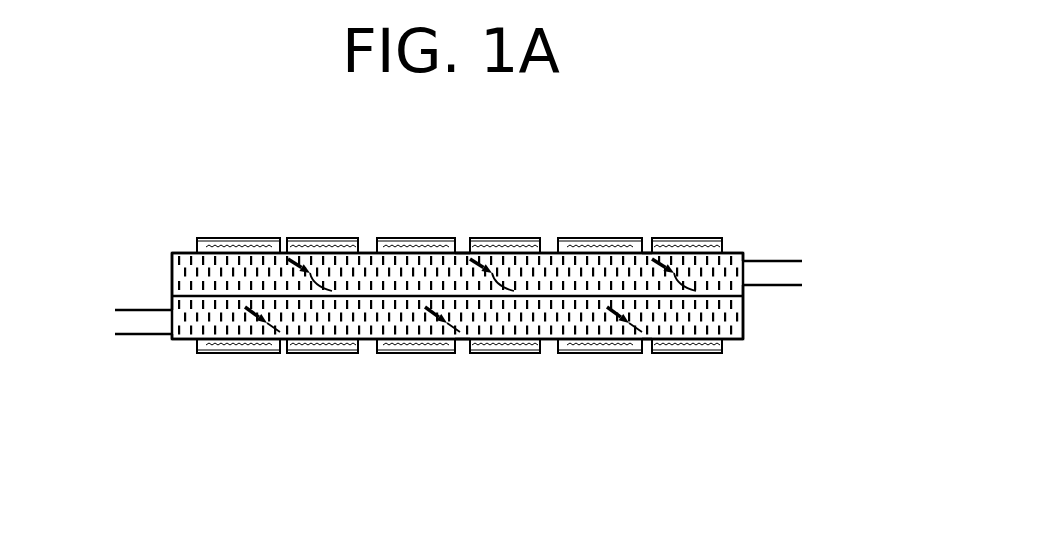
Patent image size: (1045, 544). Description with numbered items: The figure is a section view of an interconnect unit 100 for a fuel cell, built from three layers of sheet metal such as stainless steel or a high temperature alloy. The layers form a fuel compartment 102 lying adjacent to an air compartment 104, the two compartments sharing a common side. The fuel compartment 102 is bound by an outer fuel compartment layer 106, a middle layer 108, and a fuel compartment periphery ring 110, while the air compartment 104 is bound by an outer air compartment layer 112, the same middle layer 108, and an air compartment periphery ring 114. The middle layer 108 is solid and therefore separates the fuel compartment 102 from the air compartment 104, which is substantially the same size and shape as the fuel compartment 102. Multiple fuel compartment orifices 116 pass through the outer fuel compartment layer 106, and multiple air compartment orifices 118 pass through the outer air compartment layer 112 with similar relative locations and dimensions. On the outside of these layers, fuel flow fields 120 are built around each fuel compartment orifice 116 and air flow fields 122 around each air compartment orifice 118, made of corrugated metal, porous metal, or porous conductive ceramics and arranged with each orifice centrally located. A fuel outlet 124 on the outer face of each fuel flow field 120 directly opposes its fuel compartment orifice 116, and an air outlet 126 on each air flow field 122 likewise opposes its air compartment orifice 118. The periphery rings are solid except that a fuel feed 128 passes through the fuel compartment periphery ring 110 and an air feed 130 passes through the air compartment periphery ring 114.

The interconnect unit 100 is at (256, 198).
The fuel compartment 102 is at (207, 275).
The air compartment 104 is at (708, 315).
The outer fuel compartment layer 106 is at (185, 253).
The middle layer 108 is at (197, 297).
The fuel compartment periphery ring 110 is at (172, 259).
The outer air compartment layer 112 is at (725, 342).
The air compartment periphery ring 114 is at (743, 303).
The fuel compartment orifices 116 is at (463, 253).
The air compartment orifices 118 is at (462, 339).
The fuel flow fields 120 is at (722, 238).
The air flow fields 122 is at (693, 353).
The fuel outlet 124 is at (647, 253).
The air outlet 126 is at (648, 353).
The fuel feed 128 is at (753, 272).
The air feed 130 is at (140, 322).